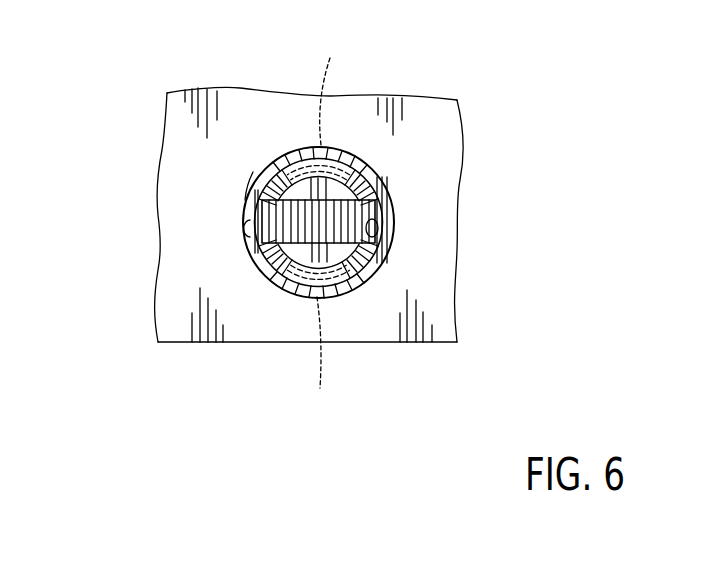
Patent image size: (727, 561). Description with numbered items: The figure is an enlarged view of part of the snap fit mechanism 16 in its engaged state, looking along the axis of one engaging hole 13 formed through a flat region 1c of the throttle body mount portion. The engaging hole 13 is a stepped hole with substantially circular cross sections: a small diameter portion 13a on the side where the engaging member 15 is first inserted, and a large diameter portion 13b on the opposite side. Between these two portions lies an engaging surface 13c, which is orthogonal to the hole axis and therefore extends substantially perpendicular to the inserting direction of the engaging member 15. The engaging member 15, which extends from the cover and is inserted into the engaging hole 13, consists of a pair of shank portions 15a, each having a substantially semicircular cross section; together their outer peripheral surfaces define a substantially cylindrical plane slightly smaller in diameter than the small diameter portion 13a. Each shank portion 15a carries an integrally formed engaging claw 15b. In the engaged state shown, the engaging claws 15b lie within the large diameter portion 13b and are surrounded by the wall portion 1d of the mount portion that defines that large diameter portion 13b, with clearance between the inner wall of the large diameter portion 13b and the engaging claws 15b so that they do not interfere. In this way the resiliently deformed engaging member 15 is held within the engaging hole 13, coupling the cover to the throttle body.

The flat region 1c is at (267, 323).
The wall portion 1d is at (253, 172).
The engaging hole 13 is at (258, 245).
The small diameter portion 13a is at (390, 236).
The large diameter portion 13b is at (245, 235).
The engaging surface 13c is at (252, 193).
The engaging member 15 is at (297, 190).
The shank portion 15a is at (326, 224).
The engaging claw 15b is at (368, 165).
The snap fit mechanism 16 is at (342, 150).